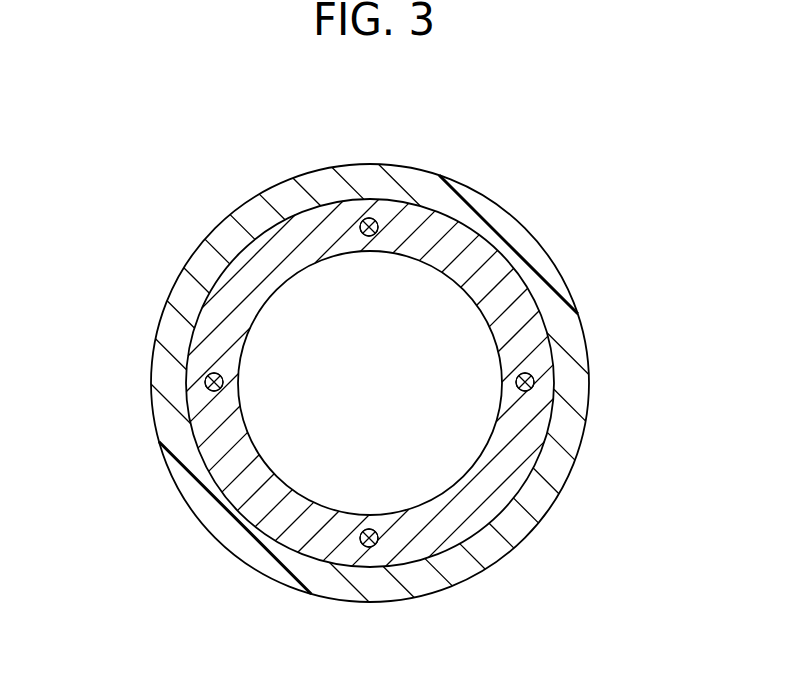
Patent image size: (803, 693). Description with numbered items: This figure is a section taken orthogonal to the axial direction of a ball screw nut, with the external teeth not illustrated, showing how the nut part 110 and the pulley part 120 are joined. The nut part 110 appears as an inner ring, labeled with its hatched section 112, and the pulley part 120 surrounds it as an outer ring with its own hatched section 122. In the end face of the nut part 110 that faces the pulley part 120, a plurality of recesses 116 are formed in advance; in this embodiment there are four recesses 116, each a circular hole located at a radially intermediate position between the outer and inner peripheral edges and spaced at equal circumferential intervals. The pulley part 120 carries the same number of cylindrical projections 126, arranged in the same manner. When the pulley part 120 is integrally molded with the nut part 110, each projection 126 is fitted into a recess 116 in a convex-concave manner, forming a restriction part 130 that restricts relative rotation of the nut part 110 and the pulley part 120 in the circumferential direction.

The nut part 110 is at (449, 362).
The inner ring portion of inner member 112 is at (488, 241).
The recess 116 is at (362, 220).
The pulley part 120 is at (424, 383).
The outer ring portion of outer member 122 is at (558, 279).
The projection 126 is at (376, 220).
The restriction part 130 is at (428, 125).